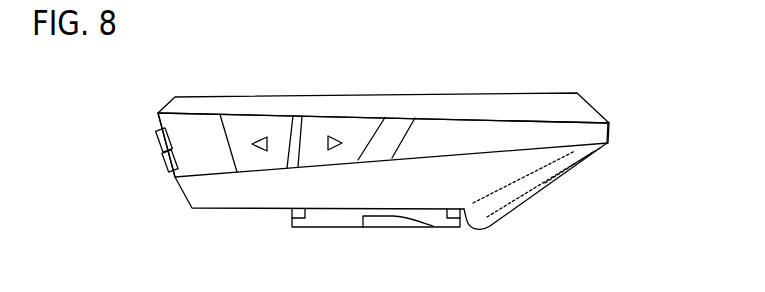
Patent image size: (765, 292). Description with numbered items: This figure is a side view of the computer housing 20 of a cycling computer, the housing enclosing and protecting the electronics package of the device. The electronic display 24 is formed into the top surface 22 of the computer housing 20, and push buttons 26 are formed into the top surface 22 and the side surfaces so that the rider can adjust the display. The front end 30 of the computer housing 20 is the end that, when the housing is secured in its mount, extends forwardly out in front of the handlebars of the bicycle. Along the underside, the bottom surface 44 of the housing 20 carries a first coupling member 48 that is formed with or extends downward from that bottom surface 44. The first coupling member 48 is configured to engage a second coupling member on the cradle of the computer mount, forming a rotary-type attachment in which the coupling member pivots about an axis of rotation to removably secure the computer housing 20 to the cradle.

The computer housing 20 is at (440, 139).
The top surface 22 is at (318, 96).
The electronic display 24 is at (415, 89).
The push buttons 26 is at (250, 128).
The front end 30 is at (651, 115).
The bottom surface 44 is at (217, 209).
The first coupling member 48 is at (358, 227).